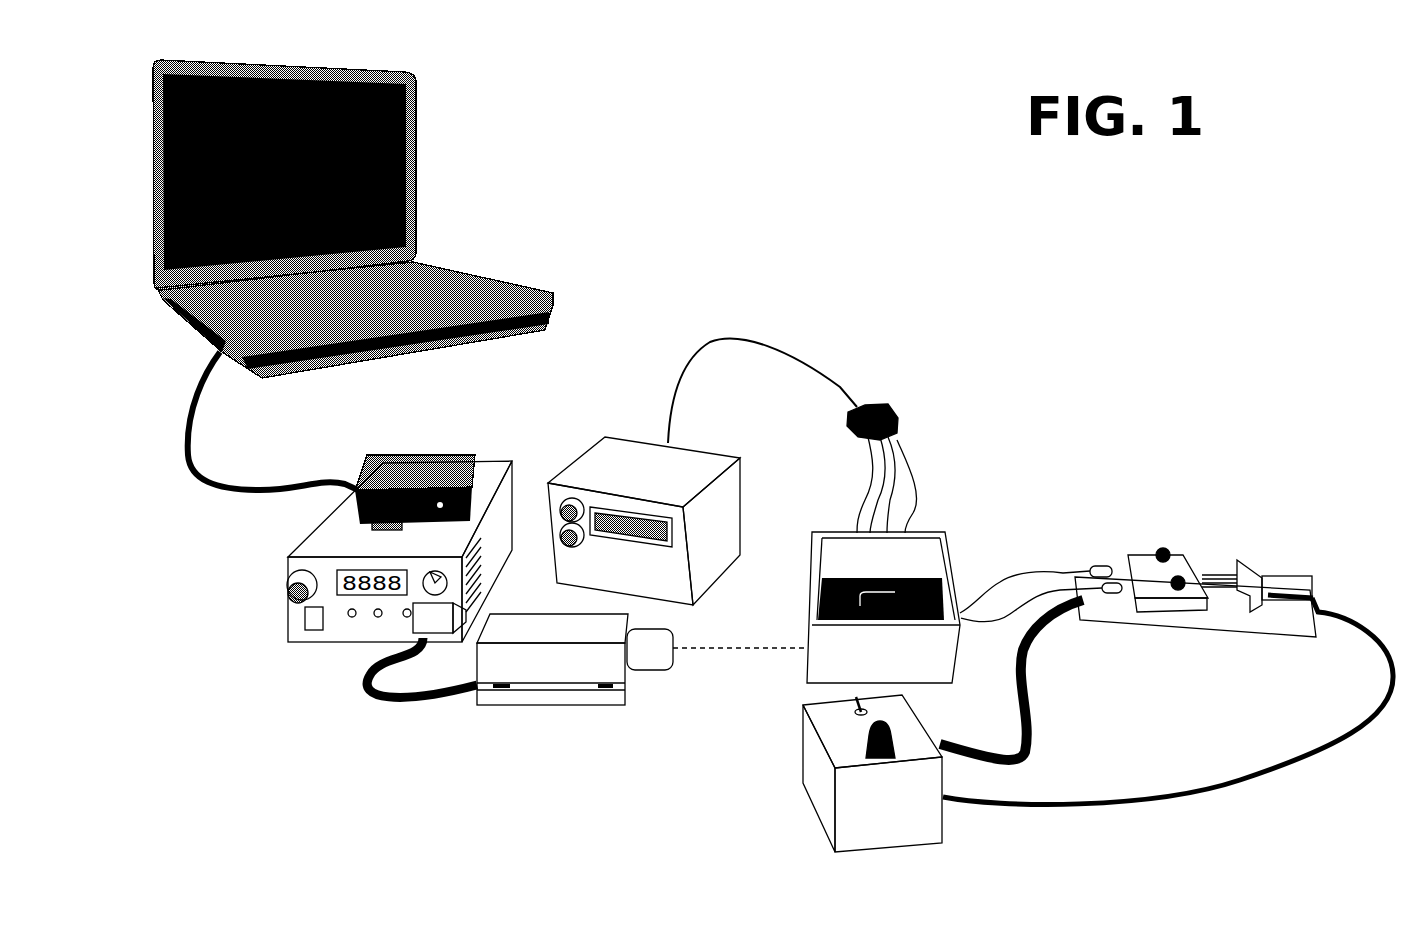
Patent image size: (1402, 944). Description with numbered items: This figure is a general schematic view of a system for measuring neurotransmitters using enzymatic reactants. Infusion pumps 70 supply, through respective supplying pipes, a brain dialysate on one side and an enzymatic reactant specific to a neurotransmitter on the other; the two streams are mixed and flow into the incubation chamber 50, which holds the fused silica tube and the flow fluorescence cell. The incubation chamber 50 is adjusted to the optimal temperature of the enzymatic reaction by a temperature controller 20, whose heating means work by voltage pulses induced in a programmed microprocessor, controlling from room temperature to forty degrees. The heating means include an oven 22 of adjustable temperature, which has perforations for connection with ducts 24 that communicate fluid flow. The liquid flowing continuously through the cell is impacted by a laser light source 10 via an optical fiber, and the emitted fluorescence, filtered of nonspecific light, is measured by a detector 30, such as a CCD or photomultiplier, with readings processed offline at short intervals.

The laser light source 10 is at (653, 660).
The temperature controller 20 is at (641, 450).
The oven 22 is at (885, 403).
The ducts 24 is at (907, 453).
The detector 30 is at (445, 465).
The incubation chamber 50 is at (947, 538).
The infusion pumps 70 is at (1182, 555).